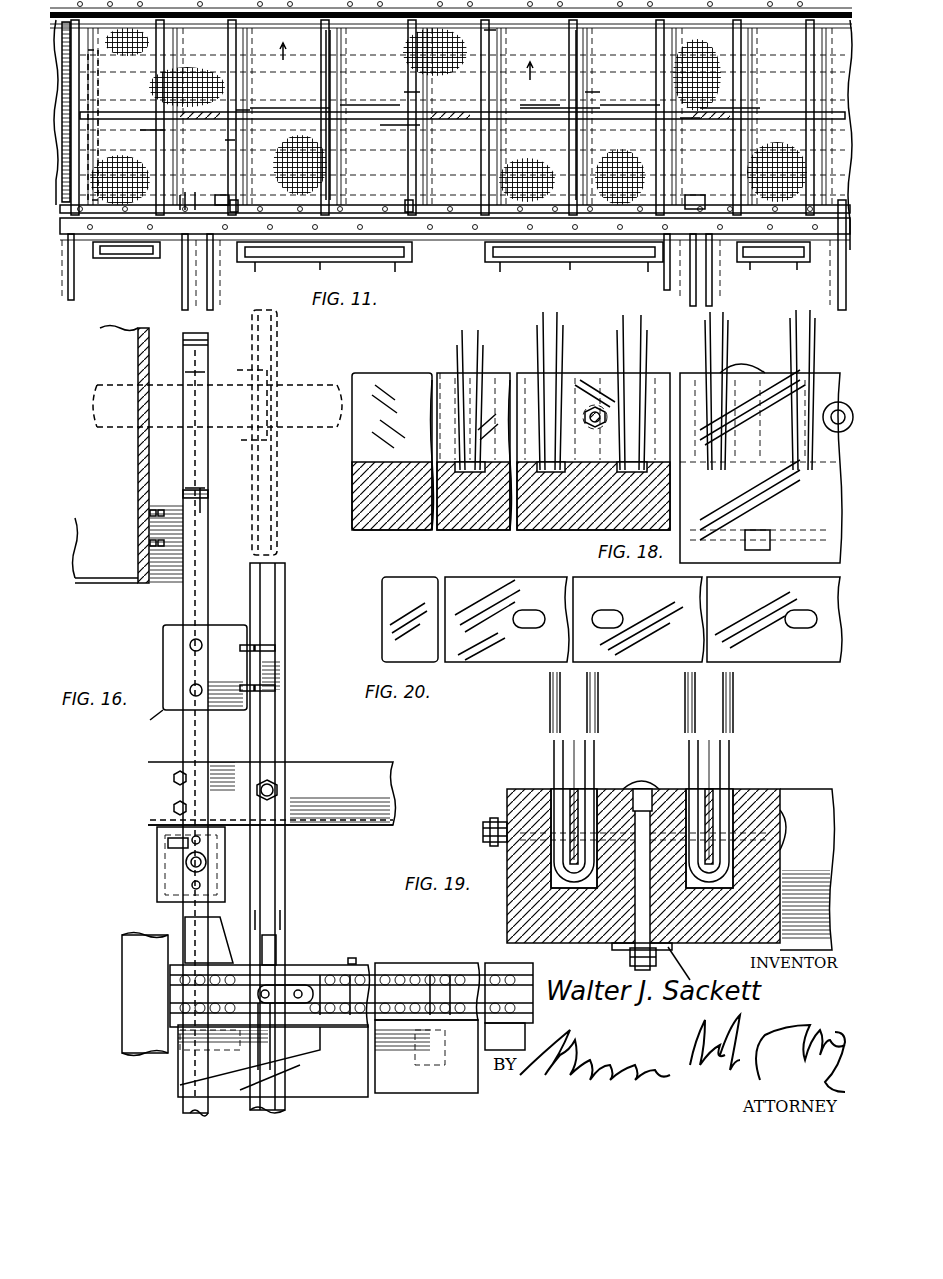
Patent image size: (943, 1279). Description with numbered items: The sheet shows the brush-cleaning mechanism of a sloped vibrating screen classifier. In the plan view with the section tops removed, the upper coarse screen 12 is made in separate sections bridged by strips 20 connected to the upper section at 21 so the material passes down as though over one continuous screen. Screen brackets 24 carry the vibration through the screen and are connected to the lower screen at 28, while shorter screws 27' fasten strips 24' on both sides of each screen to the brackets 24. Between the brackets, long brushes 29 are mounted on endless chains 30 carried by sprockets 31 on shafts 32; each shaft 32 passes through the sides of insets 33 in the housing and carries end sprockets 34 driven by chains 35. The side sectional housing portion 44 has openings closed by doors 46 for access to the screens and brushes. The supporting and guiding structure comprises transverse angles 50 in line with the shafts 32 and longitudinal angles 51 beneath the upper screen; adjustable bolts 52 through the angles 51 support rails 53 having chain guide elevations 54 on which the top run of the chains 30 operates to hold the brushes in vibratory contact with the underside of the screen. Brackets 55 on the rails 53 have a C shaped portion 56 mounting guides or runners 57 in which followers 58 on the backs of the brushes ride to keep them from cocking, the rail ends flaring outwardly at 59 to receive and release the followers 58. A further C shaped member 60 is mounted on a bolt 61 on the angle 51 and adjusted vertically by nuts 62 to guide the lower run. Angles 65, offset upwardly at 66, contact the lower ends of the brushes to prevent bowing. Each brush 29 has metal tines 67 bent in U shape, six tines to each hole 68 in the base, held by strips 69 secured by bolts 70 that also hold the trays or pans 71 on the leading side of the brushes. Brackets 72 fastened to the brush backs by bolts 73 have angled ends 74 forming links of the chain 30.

In FIG. 11, the upper coarse screen 12 is at (430, 163).
In FIG. 11, the strips 20 is at (328, 155).
In FIG. 11, the strip connection 21 is at (327, 88).
In FIG. 11, the screen brackets 24 is at (462, 110).
In FIG. 11, the strips 24' is at (526, 94).
In FIG. 11, the shorter screws 27' is at (497, 91).
In FIG. 11, the connection to lower screen 28 is at (690, 115).
In FIG. 11, the brushes 29 is at (400, 136).
In FIG. 16, the brushes 29 is at (320, 970).
In FIG. 18, the brushes 29 is at (392, 528).
In FIG. 19, the brushes 29 is at (515, 893).
In FIG. 11, the endless chains 30 is at (410, 92).
In FIG. 16, the endless chains 30 is at (270, 937).
In FIG. 11, the sprockets 31 is at (163, 32).
In FIG. 16, the sprockets 31 is at (272, 545).
In FIG. 11, the shafts 32 is at (128, 222).
In FIG. 16, the shafts 32 is at (312, 380).
In FIG. 11, the insets 33 is at (235, 205).
In FIG. 16, the insets 33 is at (140, 522).
In FIG. 11, the sprockets 34 is at (190, 195).
In FIG. 11, the chains 35 is at (165, 140).
In FIG. 11, the side sectional housing portion 44 is at (88, 260).
In FIG. 11, the doors 46 is at (597, 262).
In FIG. 16, the angles 50 is at (163, 593).
In FIG. 16, the angles 51 is at (360, 775).
In FIG. 16, the adjustable bolts 52 is at (272, 785).
In FIG. 16, the rails 53 is at (280, 740).
In FIG. 16, the chain guide elevations 54 is at (268, 712).
In FIG. 16, the brackets 55 is at (165, 712).
In FIG. 16, the C shaped portion 56 is at (163, 650).
In FIG. 16, the guides or runners 57 is at (190, 605).
In FIG. 16, the followers 58 is at (183, 937).
In FIG. 16, the flared rail ends 59 is at (185, 490).
In FIG. 16, the C shaped member 60 is at (155, 862).
In FIG. 16, the bolt 61 is at (160, 850).
In FIG. 16, the nuts 62 is at (185, 865).
In FIG. 11, the angles 65 is at (92, 134).
In FIG. 16, the angles 65 is at (130, 957).
In FIG. 11, the offset 66 is at (222, 195).
In FIG. 16, the metal tines 67 is at (393, 975).
In FIG. 18, the metal tines 67 is at (568, 358).
In FIG. 19, the metal tines 67 is at (595, 705).
In FIG. 16, the holes 68 is at (398, 978).
In FIG. 18, the holes 68 is at (667, 373).
In FIG. 19, the holes 68 is at (597, 807).
In FIG. 16, the strips 69 is at (335, 975).
In FIG. 18, the strips 69 is at (418, 373).
In FIG. 20, the strips 69 is at (475, 590).
In FIG. 19, the strips 69 is at (597, 775).
In FIG. 16, the bolts 70 is at (360, 965).
In FIG. 18, the bolts 70 is at (596, 405).
In FIG. 19, the bolts 70 is at (485, 825).
In FIG. 11, the trays or pans 71 is at (285, 67).
In FIG. 16, the trays or pans 71 is at (446, 1080).
In FIG. 19, the trays or pans 71 is at (805, 810).
In FIG. 16, the brackets 72 is at (298, 985).
In FIG. 16, the bolts 73 is at (300, 1003).
In FIG. 16, the angled ends 74 is at (265, 1010).